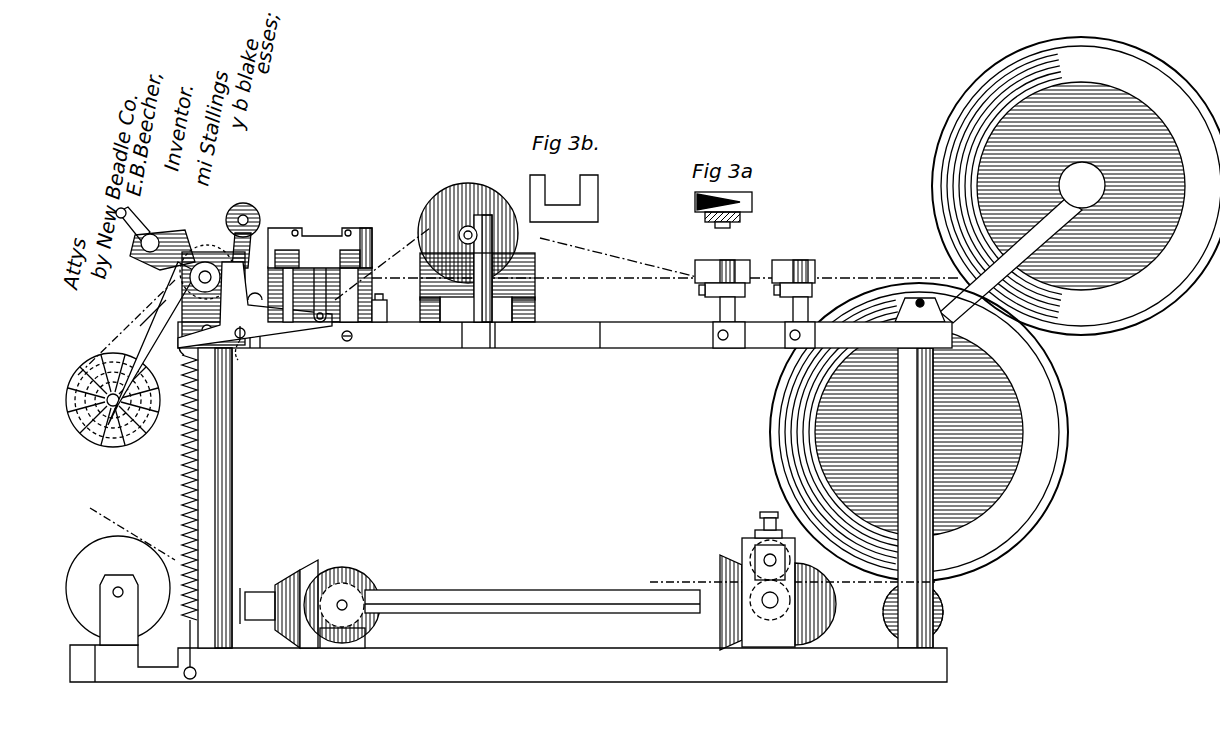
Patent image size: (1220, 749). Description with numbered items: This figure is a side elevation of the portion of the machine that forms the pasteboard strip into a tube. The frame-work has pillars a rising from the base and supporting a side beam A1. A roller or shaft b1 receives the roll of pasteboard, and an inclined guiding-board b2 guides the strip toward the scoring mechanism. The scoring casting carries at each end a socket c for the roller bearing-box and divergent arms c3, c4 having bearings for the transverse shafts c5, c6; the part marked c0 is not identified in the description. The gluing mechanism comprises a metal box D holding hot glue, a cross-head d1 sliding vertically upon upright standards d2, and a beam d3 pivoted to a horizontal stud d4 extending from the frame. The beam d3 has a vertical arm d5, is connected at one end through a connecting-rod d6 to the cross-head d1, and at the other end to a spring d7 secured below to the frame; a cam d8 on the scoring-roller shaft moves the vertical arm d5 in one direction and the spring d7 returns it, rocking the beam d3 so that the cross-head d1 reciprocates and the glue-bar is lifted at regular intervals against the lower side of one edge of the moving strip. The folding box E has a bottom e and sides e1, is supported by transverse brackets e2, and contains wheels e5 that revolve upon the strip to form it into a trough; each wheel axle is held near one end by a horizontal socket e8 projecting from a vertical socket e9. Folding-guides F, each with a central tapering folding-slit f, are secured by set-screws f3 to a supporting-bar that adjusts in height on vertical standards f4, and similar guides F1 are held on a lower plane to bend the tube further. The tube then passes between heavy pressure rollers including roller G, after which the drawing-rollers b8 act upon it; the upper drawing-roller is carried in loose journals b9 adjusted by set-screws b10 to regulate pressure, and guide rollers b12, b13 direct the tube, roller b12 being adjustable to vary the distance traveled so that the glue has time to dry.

In FIG. 3, the pressure roller G is at (1076, 186).
In FIG. 3, the side beam A1 is at (919, 432).
In FIG. 3, the pillar a is at (915, 498).
In FIG. 3, the roller or shaft b1 is at (113, 414).
In FIG. 3, the inclined guiding-board b2 is at (352, 582).
In FIG. 3, the drawing-rollers b8 is at (791, 590).
In FIG. 3, the loose boxes or journals b9 is at (776, 560).
In FIG. 3, the set-screws b10 is at (760, 508).
In FIG. 3, the guide roller b12 is at (120, 576).
In FIG. 3, the guide roller b13 is at (943, 613).
In FIG. 3, the socket c is at (194, 298).
In FIG. 3, the arm c0 is at (125, 212).
In FIG. 3, the divergent arm c3 is at (138, 256).
In FIG. 3, the divergent arm c4 is at (240, 204).
In FIG. 3, the transverse shaft c5 is at (158, 232).
In FIG. 3, the transverse shaft c6 is at (255, 210).
In FIG. 3, the glue box D is at (379, 292).
In FIG. 3, the cross-head d1 is at (372, 238).
In FIG. 3, the upright standards d2 is at (375, 335).
In FIG. 3, the beam d3 is at (247, 333).
In FIG. 3, the horizontal stud or shaft d4 is at (253, 358).
In FIG. 3, the vertical arm d5 is at (251, 289).
In FIG. 3, the connecting-rod d6 is at (335, 338).
In FIG. 3, the spring d7 is at (183, 472).
In FIG. 3, the cam d8 is at (212, 250).
In FIG. 3, the guiding or folding box E is at (535, 295).
In FIG. 3B, the guiding or folding box E is at (598, 200).
In FIG. 3B, the bottom e is at (561, 199).
In FIG. 3, the sides e1 is at (520, 272).
In FIG. 3B, the sides e1 is at (586, 178).
In FIG. 3, the transverse bars or brackets e2 is at (539, 242).
In FIG. 3, the wheels e5 is at (496, 204).
In FIG. 3, the horizontal socket e8 is at (440, 200).
In FIG. 3, the vertical socket e9 is at (508, 214).
In FIG. 3, the folding-guides F is at (740, 260).
In FIG. 3A, the folding-guides F is at (752, 208).
In FIG. 3, the folding-guides F1 is at (800, 260).
In FIG. 3A, the tapering folding-slit f is at (695, 202).
In FIG. 3, the set-screws f3 is at (700, 290).
In FIG. 3, the vertical standards f4 is at (720, 308).